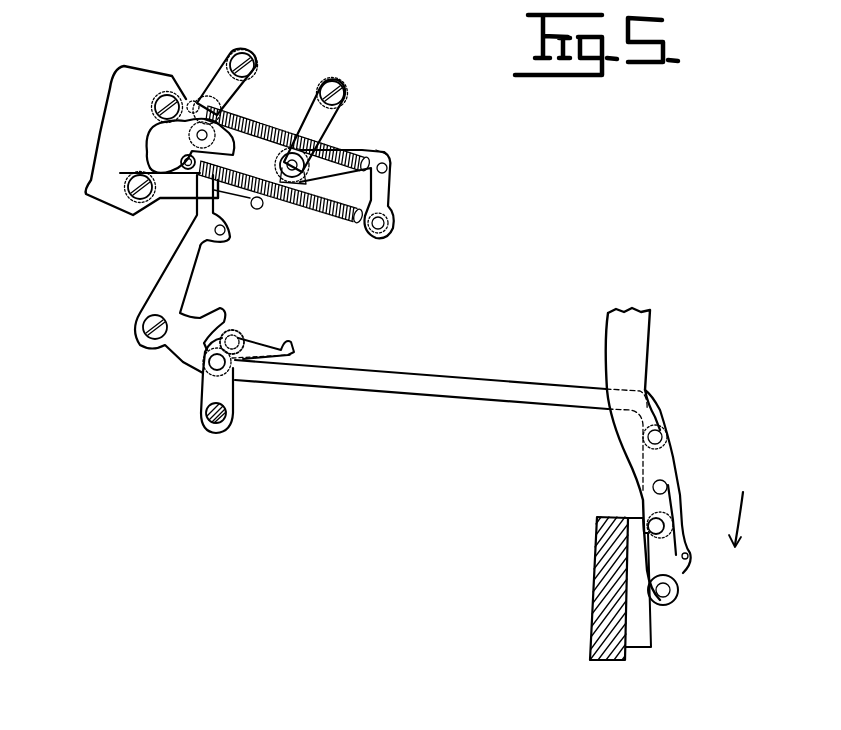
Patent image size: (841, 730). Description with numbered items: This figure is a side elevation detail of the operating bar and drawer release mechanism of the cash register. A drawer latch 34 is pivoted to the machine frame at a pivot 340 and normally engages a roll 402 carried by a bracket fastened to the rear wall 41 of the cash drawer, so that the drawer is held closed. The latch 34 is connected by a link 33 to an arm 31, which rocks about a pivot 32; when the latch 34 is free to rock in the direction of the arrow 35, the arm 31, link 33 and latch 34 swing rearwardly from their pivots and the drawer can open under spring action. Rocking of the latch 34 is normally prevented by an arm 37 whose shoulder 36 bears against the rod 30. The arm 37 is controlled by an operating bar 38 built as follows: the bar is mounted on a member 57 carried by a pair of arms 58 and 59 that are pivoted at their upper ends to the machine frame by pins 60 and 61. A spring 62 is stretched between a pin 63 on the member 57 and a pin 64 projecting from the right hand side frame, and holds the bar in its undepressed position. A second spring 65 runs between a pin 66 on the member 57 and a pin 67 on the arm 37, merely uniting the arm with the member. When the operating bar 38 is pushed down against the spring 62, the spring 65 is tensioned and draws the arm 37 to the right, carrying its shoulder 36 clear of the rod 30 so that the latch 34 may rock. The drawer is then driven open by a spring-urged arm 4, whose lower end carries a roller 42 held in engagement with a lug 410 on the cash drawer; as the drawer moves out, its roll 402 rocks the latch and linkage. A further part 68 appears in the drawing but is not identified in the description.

The arm 4 is at (627, 360).
The rod 30 is at (267, 306).
The arm 31 is at (202, 397).
The pivot 32 is at (209, 423).
The link 33 is at (424, 382).
The drawer latch 34 is at (673, 458).
The arrow 35 is at (738, 521).
The shoulder 36 is at (288, 350).
The arm 37 is at (175, 270).
The operating bar 38 is at (100, 165).
The rear wall of the cash drawer 41 is at (605, 592).
The roller 42 is at (674, 603).
The member 57 is at (343, 142).
The arm 58 is at (228, 82).
The arm 59 is at (318, 110).
The pin 60 is at (253, 50).
The pin 61 is at (340, 85).
The spring 62 is at (365, 150).
The pin 63 is at (387, 170).
The pin 64 is at (183, 102).
The spring 65 is at (320, 210).
The pin 66 is at (394, 217).
The pin 67 is at (118, 182).
The lever 68 is at (170, 137).
The pivot 340 is at (677, 485).
The roll 402 is at (652, 518).
The lug 410 is at (643, 638).